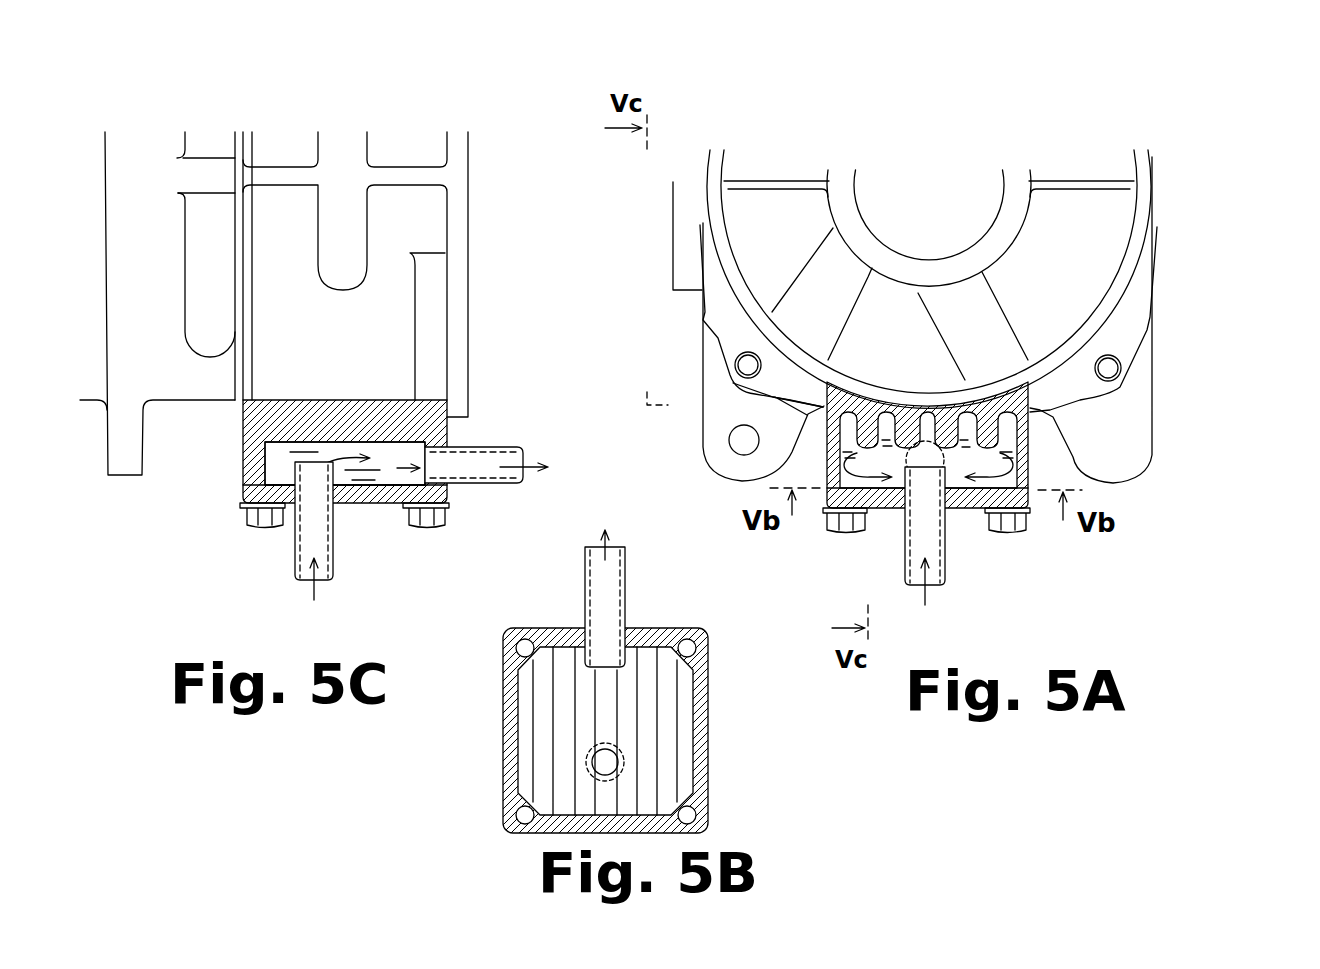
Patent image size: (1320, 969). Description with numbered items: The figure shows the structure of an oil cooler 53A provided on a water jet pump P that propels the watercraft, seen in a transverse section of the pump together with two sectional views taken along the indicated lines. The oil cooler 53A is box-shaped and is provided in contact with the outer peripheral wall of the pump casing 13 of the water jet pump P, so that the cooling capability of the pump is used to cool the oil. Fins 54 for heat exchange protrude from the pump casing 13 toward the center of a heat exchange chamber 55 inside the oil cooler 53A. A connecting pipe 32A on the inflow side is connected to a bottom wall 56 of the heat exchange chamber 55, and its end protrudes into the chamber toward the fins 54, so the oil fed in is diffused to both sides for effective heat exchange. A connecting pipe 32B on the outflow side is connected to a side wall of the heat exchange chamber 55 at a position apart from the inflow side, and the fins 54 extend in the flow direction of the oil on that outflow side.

In FIG. 5C, the water jet pump P is at (495, 239).
In FIG. 5A, the water jet pump P is at (960, 316).
In FIG. 5A, the pump casing 13 is at (1090, 340).
In FIG. 5C, the connecting pipe 32A is at (337, 550).
In FIG. 5A, the connecting pipe 32A is at (903, 547).
In FIG. 5C, the connecting pipe 32B is at (490, 445).
In FIG. 5B, the connecting pipe 32B is at (628, 598).
In FIG. 5C, the oil cooler 53A is at (231, 465).
In FIG. 5B, the oil cooler 53A is at (722, 736).
In FIG. 5A, the oil cooler 53A is at (1043, 482).
In FIG. 5A, the fins 54 is at (1002, 437).
In FIG. 5C, the heat exchange chamber 55 is at (270, 463).
In FIG. 5A, the heat exchange chamber 55 is at (1010, 467).
In FIG. 5A, the bottom wall 56 is at (962, 513).